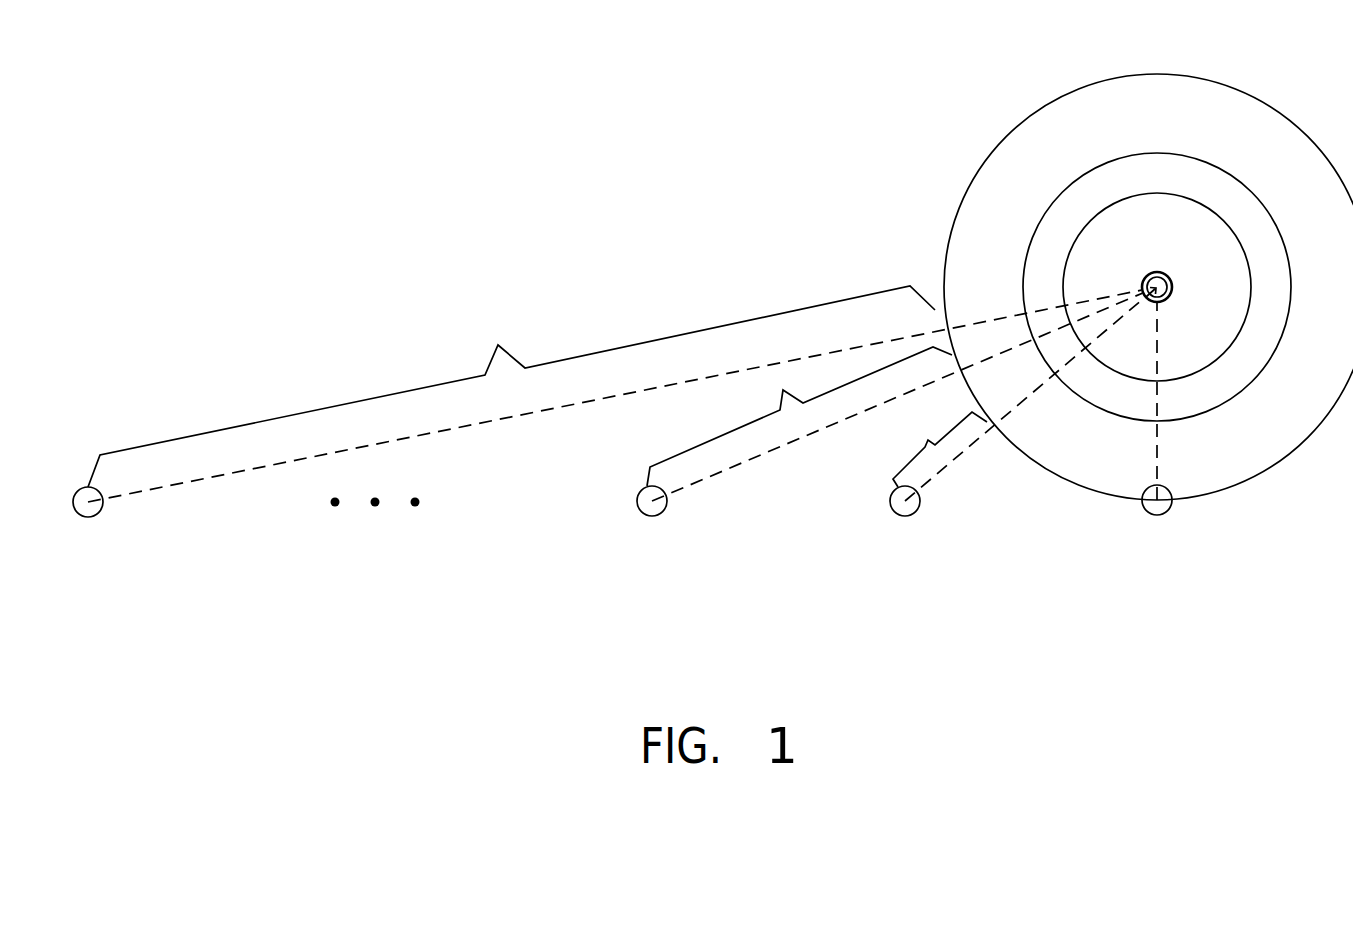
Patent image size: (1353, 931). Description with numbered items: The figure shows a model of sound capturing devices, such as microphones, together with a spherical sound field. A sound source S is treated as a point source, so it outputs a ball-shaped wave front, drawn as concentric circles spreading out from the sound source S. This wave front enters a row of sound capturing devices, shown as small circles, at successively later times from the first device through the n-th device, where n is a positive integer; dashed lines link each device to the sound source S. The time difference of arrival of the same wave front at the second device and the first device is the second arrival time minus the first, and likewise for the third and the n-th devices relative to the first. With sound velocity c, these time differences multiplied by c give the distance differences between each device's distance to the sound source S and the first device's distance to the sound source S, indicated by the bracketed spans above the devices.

The sound source S is at (1164, 274).